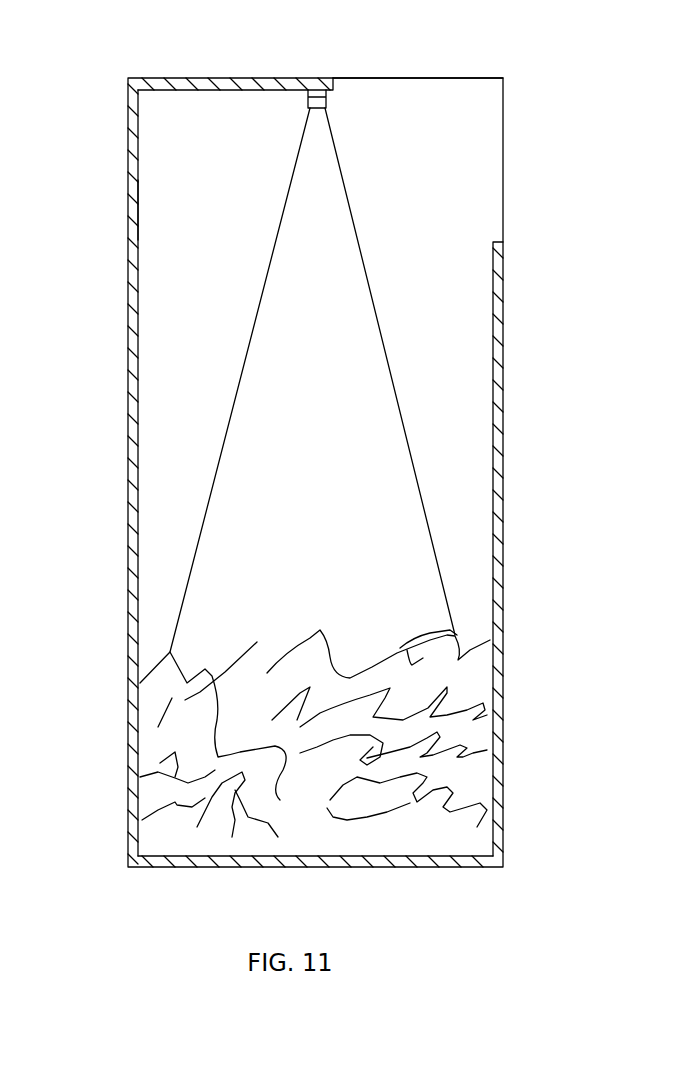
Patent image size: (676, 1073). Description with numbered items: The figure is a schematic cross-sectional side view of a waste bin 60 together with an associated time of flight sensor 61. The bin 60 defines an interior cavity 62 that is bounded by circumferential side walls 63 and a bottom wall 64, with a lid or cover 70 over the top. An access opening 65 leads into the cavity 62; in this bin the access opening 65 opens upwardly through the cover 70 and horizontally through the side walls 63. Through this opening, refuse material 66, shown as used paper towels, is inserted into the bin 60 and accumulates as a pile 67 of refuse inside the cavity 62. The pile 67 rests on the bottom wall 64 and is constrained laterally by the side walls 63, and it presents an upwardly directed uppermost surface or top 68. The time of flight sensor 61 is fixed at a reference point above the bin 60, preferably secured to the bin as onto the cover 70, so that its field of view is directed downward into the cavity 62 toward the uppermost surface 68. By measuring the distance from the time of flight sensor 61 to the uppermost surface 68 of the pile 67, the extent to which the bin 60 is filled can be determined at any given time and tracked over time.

The waste bin 60 is at (96, 309).
The time of flight sensor 61 is at (322, 88).
The interior cavity 62 is at (165, 207).
The side walls 63 is at (128, 412).
The bottom wall 64 is at (207, 867).
The access opening 65 is at (444, 96).
The refuse material 66 is at (160, 776).
The pile 67 is at (244, 679).
The uppermost surface 68 is at (321, 624).
The lid or cover 70 is at (207, 76).